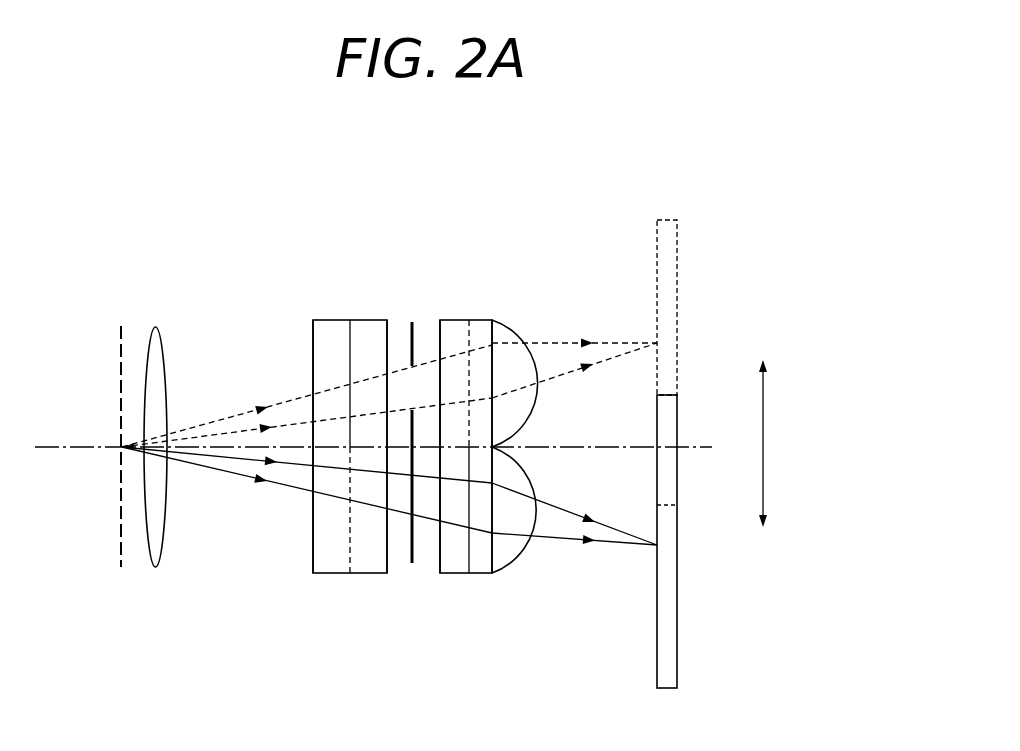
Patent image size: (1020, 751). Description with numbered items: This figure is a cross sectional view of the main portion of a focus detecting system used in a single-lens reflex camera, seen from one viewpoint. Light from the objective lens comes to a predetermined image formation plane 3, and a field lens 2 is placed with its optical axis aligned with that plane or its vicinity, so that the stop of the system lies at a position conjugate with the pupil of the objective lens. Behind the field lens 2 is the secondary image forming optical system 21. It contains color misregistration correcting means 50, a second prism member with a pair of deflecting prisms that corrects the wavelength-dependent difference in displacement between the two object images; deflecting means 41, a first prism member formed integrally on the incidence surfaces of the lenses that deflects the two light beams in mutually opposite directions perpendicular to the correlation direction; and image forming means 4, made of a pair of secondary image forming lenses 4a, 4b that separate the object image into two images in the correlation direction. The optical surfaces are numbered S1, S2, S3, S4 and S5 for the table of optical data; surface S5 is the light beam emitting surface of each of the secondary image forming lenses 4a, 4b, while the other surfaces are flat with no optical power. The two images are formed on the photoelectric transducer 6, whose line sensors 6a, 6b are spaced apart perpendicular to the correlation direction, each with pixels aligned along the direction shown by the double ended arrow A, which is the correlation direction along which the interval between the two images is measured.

The field lens 2 is at (165, 540).
The predetermined image formation plane 3 is at (118, 510).
The secondary image forming optical system 21 is at (430, 394).
The color misregistration correcting means 50 is at (344, 401).
The surface S1 is at (312, 552).
The surface S2 is at (386, 545).
The surface S3 is at (411, 547).
The deflecting means 41 is at (462, 417).
The surface S4 is at (460, 560).
The surface S5 is at (505, 563).
The image forming means 4 is at (553, 419).
The secondary image forming lens 4a is at (518, 383).
The secondary image forming lens 4b is at (530, 520).
The photoelectric transducer 6 is at (705, 421).
The line sensor 6a is at (672, 280).
The line sensor 6b is at (672, 615).
The double ended arrow A is at (763, 447).